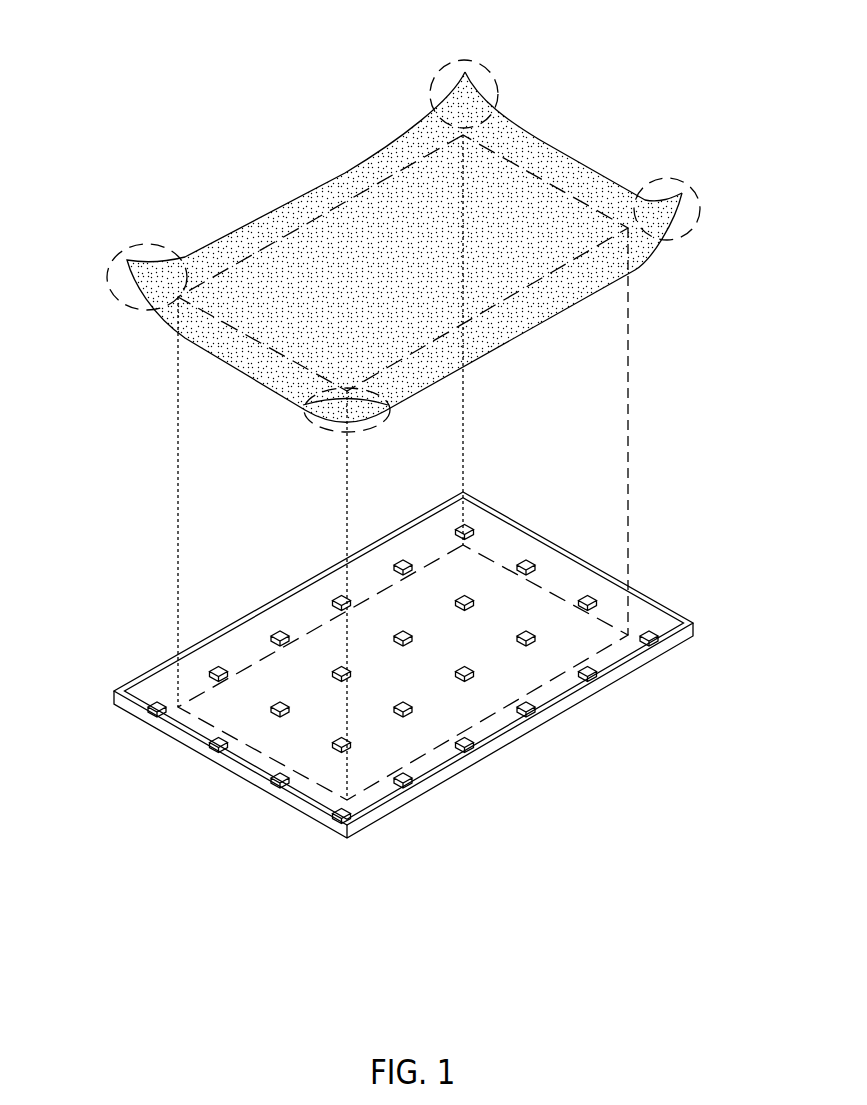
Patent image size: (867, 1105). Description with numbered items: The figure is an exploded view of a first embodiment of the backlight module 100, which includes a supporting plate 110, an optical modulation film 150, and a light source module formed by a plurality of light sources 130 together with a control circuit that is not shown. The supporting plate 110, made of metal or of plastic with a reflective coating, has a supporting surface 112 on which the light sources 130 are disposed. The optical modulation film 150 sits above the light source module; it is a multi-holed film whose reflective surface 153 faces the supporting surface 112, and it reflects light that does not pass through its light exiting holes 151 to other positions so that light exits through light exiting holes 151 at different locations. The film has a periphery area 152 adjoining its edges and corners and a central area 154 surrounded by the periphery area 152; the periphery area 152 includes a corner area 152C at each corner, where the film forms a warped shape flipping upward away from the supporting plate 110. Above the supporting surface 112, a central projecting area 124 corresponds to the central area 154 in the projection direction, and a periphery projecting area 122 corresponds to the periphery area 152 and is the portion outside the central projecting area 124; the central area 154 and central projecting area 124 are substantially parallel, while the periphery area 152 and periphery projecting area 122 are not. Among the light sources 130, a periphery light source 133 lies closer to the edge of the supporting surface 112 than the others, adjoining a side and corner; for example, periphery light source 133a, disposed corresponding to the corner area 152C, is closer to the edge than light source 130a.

The backlight module 100 is at (214, 26).
The supporting plate 110 is at (112, 698).
The supporting surface 112 is at (167, 690).
The periphery projecting area 122 is at (439, 531).
The central projecting area 124 is at (336, 630).
The light sources 130 is at (476, 682).
The light source 130a is at (527, 630).
The periphery light source 133 is at (540, 712).
The periphery light source 133a is at (650, 630).
The optical modulation film 150 is at (203, 205).
The light exiting holes 151 is at (277, 225).
The periphery area 152 is at (340, 185).
The corner area 152C is at (478, 63).
The reflective surface 153 is at (648, 269).
The central area 154 is at (409, 186).